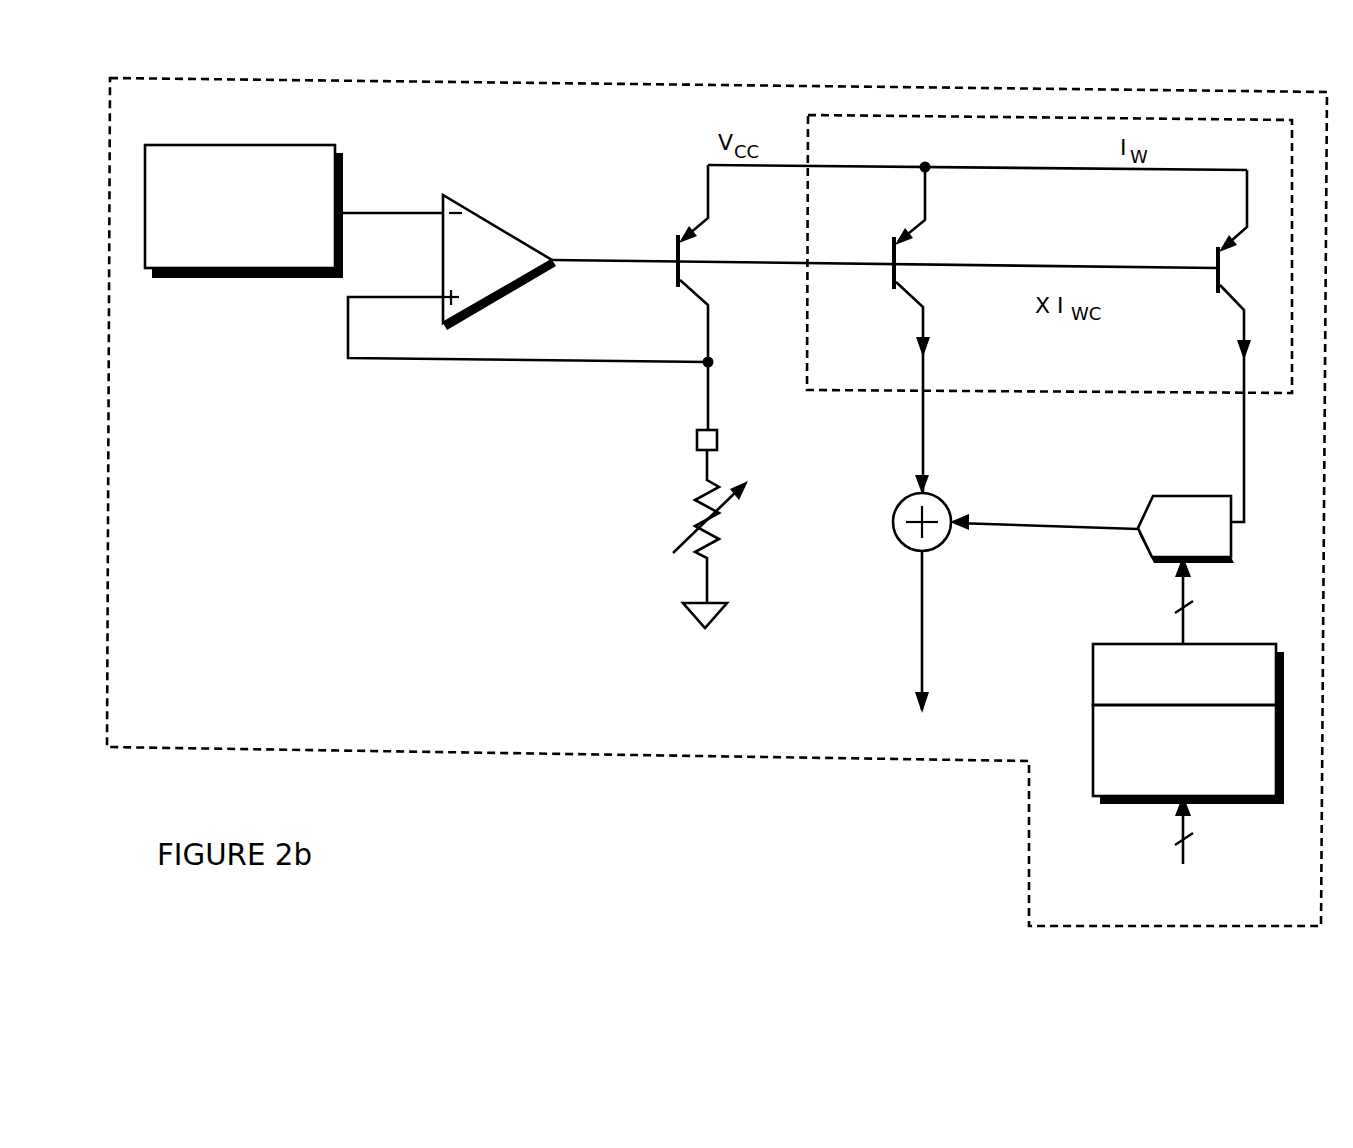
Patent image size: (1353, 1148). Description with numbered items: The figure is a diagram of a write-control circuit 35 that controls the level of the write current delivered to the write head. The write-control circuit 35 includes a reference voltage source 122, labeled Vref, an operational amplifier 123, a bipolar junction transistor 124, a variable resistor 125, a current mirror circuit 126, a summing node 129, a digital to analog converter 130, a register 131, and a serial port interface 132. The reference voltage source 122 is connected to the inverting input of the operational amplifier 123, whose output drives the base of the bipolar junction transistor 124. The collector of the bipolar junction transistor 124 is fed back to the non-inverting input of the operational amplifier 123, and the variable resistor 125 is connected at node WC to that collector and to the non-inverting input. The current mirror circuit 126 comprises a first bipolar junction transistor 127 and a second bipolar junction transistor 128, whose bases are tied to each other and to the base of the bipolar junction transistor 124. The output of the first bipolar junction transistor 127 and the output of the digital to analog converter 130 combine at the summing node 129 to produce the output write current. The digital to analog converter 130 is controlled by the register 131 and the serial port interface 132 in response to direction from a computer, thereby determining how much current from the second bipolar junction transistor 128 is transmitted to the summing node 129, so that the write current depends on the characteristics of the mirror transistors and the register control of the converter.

The write-control circuit 35 is at (656, 82).
The reference voltage source 122 is at (265, 153).
The operational amplifier 123 is at (498, 233).
The bipolar junction transistor 124 is at (677, 275).
The variable resistor 125 is at (700, 492).
The current mirror circuit 126 is at (803, 115).
The first bipolar junction transistor 127 is at (890, 275).
The second bipolar junction transistor 128 is at (1213, 281).
The summing node 129 is at (900, 532).
The digital to analog converter 130 is at (1160, 497).
The register 131 is at (1117, 648).
The serial port interface 132 is at (1095, 765).